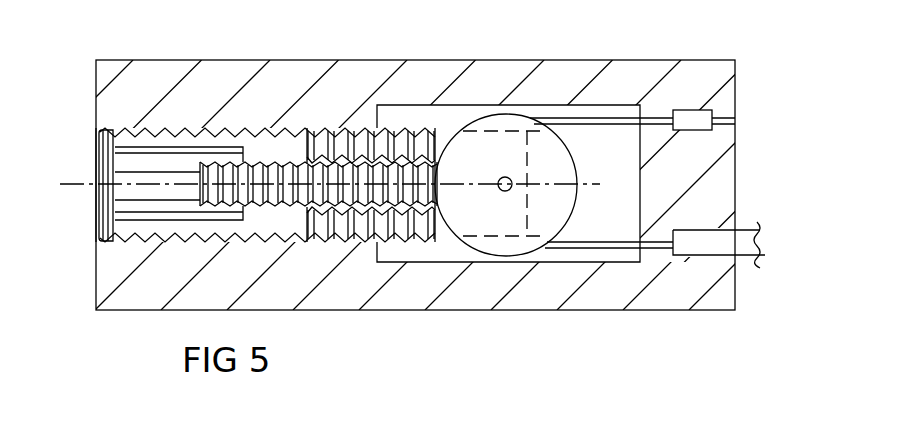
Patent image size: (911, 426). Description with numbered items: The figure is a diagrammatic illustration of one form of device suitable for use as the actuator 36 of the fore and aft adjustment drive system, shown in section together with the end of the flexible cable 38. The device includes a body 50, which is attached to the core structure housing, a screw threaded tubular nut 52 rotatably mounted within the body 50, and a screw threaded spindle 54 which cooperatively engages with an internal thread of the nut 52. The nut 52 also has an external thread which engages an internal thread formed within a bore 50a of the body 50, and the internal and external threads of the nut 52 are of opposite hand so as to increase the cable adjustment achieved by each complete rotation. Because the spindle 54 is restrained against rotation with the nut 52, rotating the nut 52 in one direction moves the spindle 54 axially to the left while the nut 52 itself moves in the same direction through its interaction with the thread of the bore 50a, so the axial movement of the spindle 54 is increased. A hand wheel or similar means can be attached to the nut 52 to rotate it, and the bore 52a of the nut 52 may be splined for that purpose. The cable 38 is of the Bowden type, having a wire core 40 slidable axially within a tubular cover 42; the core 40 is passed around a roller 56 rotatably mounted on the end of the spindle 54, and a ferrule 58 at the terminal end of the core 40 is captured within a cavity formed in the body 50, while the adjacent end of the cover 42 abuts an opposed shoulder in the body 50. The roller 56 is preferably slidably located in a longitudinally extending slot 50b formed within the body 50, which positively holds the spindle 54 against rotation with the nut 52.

The actuator 36 is at (666, 45).
The flexible cable 38 is at (748, 226).
The wire core 40 is at (590, 118).
The tubular cover 42 is at (742, 245).
The body 50 is at (356, 68).
The bore 50a is at (108, 224).
The longitudinally extending slot 50b is at (433, 117).
The screw threaded tubular nut 52 is at (283, 152).
The bore of the nut 52a is at (133, 171).
The screw threaded spindle 54 is at (385, 170).
The roller 56 is at (492, 212).
The ferrule 58 is at (700, 116).